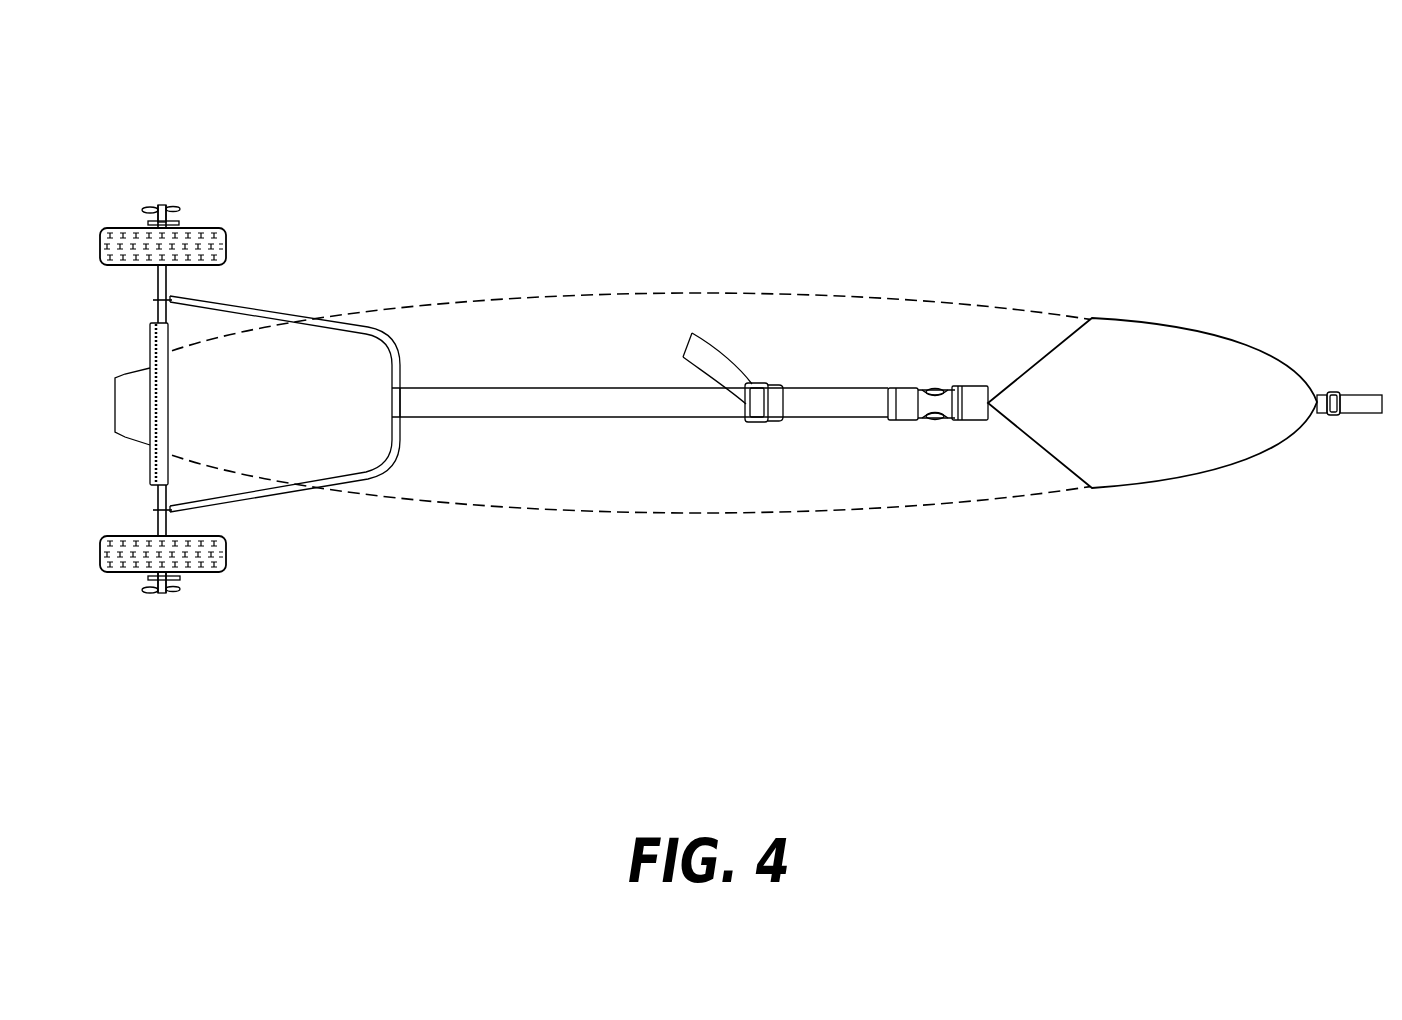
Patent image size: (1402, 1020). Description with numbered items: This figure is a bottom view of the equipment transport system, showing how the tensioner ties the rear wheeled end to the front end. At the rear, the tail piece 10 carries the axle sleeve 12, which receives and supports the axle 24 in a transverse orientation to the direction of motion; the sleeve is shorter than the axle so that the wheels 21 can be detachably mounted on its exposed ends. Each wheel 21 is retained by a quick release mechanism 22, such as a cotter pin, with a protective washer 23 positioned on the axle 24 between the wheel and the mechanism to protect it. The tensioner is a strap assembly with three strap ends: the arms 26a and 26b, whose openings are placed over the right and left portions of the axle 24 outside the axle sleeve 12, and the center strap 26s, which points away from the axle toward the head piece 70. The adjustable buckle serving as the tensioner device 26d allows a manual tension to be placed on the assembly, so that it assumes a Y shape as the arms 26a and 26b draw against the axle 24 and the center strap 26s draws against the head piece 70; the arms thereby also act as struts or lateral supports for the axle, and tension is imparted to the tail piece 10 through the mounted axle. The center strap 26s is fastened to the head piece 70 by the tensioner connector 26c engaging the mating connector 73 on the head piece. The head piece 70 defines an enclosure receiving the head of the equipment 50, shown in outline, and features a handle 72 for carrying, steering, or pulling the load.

The tail piece 10 is at (115, 403).
The axle sleeve 12 is at (150, 330).
The wheel 21 is at (101, 247).
The quick release mechanism 22 is at (173, 210).
The protective washer 23 is at (148, 218).
The axle 24 is at (163, 206).
The arm of tensioner 26a is at (285, 318).
The arm of tensioner 26b is at (303, 494).
The center strap 26s is at (565, 388).
The tensioner device 26d is at (758, 384).
The tensioner connector 26c is at (931, 388).
The mating connector 73 is at (951, 423).
The head piece 70 is at (1200, 347).
The handle 72 is at (1357, 392).
The equipment 50 is at (631, 512).